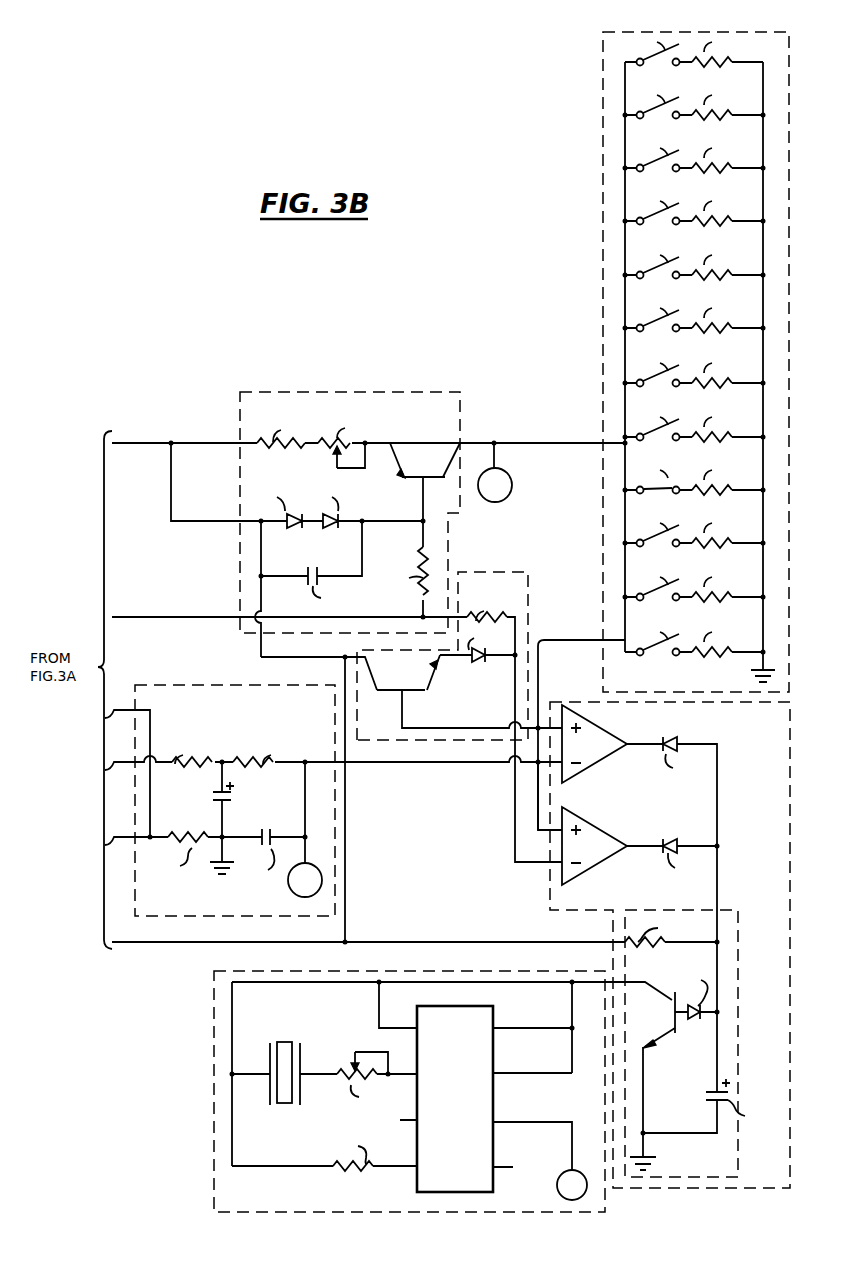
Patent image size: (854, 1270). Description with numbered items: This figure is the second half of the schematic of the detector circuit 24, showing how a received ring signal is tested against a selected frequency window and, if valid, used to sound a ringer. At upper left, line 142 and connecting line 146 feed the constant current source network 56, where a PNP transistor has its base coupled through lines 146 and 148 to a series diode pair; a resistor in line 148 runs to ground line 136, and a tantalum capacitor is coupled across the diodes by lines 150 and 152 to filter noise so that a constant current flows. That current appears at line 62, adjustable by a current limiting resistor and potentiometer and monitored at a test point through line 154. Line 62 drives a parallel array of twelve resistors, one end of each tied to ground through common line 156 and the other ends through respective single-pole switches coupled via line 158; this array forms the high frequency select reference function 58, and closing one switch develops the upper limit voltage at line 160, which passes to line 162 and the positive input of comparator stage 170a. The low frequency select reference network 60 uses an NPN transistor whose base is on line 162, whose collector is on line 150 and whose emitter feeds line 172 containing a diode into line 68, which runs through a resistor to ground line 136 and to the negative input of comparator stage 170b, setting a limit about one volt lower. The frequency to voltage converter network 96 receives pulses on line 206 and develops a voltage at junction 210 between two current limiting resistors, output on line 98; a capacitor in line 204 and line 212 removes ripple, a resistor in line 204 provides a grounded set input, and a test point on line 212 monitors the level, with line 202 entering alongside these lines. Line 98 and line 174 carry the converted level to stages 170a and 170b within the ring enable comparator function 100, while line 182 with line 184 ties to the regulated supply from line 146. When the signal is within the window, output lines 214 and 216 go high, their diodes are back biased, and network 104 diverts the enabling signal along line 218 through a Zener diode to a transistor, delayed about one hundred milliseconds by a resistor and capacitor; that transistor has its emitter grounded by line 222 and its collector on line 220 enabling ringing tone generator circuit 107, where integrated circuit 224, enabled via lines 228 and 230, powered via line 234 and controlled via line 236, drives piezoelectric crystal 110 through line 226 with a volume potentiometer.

The circuit 24 is at (176, 300).
The constant current source network 56 is at (378, 396).
The high frequency select reference function 58 is at (666, 350).
The low frequency select reference network 60 is at (528, 591).
The line 62 is at (561, 441).
The line 68 is at (515, 823).
The frequency to voltage converter network 96 is at (205, 685).
The line 98 is at (405, 764).
The ring enable comparator function 100 is at (550, 906).
The network 104 is at (737, 1036).
The ringing tone generator circuit 107 is at (214, 1082).
The piezoelectric crystal 110 is at (280, 1043).
The ground line 136 is at (151, 617).
The line 142 is at (132, 443).
The connecting line 146 is at (171, 489).
The line 148 is at (423, 500).
The line 150 is at (261, 560).
The line 152 is at (362, 548).
The line 154 is at (497, 458).
The common line 156 is at (766, 63).
The line 158 is at (625, 93).
The line 160 is at (544, 642).
The line 162 is at (449, 728).
The comparator stage 170a is at (598, 726).
The comparator stage 170b is at (586, 830).
The line 172 is at (455, 662).
The line 174 is at (538, 802).
The line 182 is at (166, 949).
The line 184 is at (345, 886).
The input line 202 is at (105, 718).
The line 204 is at (105, 845).
The line 206 is at (105, 770).
The junction 210 is at (222, 762).
The line 212 is at (305, 813).
The output line 214 is at (651, 742).
The output line 216 is at (653, 839).
The line 218 is at (717, 1020).
The line 220 is at (628, 982).
The line 222 is at (643, 1084).
The integrated circuit 224 is at (451, 1006).
The line 226 is at (307, 1065).
The line 228 is at (379, 1000).
The line 230 is at (511, 1028).
The line 234 is at (556, 1124).
The line 236 is at (511, 1073).